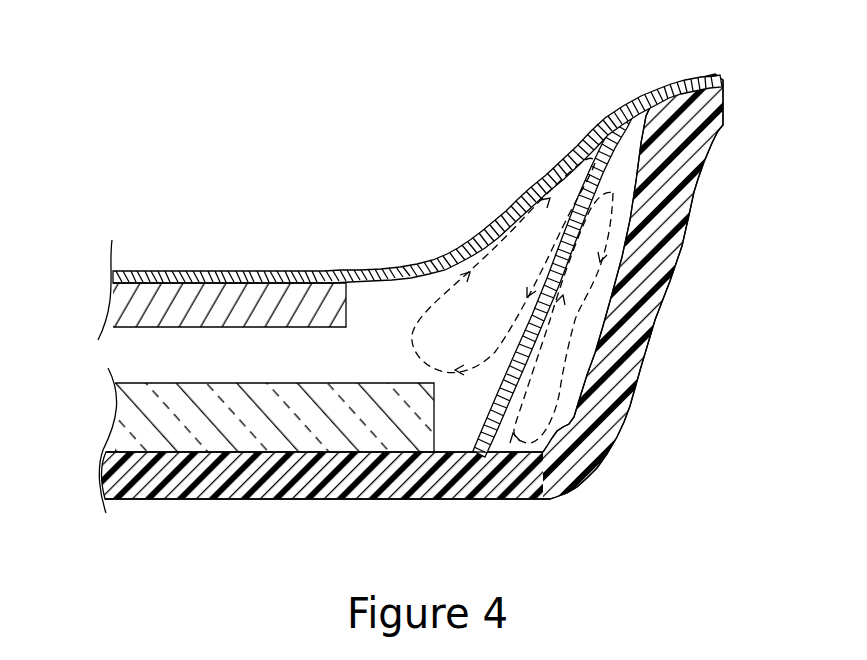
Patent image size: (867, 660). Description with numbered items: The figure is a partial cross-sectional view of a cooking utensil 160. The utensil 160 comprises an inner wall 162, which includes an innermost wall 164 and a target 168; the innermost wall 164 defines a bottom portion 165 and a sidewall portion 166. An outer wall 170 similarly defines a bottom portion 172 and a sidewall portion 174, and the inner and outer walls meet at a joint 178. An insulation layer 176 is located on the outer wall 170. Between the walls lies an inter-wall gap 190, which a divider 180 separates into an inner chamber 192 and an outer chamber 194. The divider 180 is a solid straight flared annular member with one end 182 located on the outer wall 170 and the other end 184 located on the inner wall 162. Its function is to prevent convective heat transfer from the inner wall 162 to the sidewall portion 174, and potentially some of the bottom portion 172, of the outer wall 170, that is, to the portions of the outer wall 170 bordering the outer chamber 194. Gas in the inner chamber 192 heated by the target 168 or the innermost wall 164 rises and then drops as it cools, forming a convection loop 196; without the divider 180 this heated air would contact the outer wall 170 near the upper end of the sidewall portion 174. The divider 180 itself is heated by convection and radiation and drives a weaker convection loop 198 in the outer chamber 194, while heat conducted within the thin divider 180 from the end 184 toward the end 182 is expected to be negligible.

The utensil 160 is at (253, 199).
The inner wall 162 is at (326, 268).
The innermost wall 164 is at (383, 268).
The bottom portion 165 is at (417, 173).
The sidewall portion 166 is at (585, 140).
The target 168 is at (125, 290).
The outer wall 170 is at (598, 472).
The bottom portion 172 is at (352, 480).
The sidewall portion 174 is at (670, 210).
The insulation layer 176 is at (120, 420).
The joint 178 is at (718, 72).
The divider 180 is at (523, 362).
The end 182 is at (478, 458).
The end 184 is at (642, 96).
The inter-wall gap 190 is at (516, 230).
The inner chamber 192 is at (143, 357).
The outer chamber 194 is at (600, 320).
The convection loop 196 is at (418, 318).
The convection loop 198 is at (573, 363).